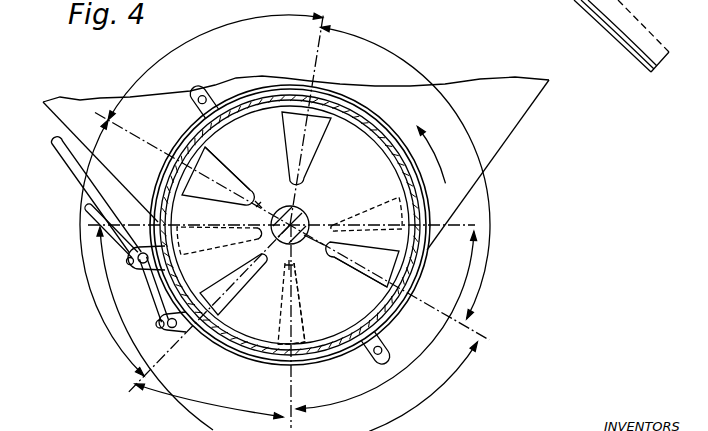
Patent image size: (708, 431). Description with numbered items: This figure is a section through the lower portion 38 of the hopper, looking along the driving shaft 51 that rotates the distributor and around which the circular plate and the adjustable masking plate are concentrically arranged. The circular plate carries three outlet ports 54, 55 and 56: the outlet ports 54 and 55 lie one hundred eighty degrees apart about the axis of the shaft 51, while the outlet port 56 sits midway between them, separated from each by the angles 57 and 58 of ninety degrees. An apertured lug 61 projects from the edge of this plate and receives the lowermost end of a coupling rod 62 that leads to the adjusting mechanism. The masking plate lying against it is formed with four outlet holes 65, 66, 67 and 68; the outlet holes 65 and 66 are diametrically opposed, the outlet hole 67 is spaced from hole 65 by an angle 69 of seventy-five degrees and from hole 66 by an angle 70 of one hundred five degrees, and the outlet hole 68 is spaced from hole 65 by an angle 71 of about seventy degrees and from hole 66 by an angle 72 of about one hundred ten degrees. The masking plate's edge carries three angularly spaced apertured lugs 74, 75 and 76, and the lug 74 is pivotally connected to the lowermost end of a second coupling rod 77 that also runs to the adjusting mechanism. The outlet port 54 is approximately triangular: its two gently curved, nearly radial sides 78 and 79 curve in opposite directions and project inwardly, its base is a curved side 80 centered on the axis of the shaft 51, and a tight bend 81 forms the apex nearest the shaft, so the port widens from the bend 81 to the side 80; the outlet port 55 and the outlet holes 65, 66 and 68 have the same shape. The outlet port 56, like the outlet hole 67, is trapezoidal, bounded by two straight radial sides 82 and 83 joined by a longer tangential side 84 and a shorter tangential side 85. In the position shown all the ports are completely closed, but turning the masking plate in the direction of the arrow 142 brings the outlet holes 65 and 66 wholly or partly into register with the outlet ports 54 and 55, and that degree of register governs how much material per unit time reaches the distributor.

The lower portion of the hopper 38 is at (514, 129).
The driving shaft 51 is at (302, 208).
The outlet port 54 is at (219, 250).
The outlet port 55 is at (388, 204).
The outlet port 56 is at (356, 264).
The angle 57 is at (208, 400).
The angle 58 is at (364, 391).
The apertured lug 61 is at (174, 322).
The coupling rod 62 is at (85, 212).
The outlet hole 65 is at (208, 152).
The outlet hole 66 is at (370, 284).
The outlet hole 67 is at (228, 302).
The outlet hole 68 is at (318, 148).
The angle 69 is at (104, 334).
The angle 70 is at (416, 404).
The angle 71 is at (233, 26).
The angle 72 is at (381, 47).
The apertured lug 74 is at (143, 246).
The apertured lug 75 is at (195, 112).
The apertured lug 76 is at (384, 329).
The coupling rod 77 is at (64, 161).
The side of outlet port 78 is at (223, 178).
The side of outlet port 79 is at (244, 241).
The curved side 80 is at (156, 221).
The tight bend 81 is at (259, 204).
The straight side 82 is at (278, 313).
The straight side 83 is at (306, 306).
The longer side 84 is at (304, 333).
The shorter side 85 is at (311, 248).
The arrow 142 is at (443, 155).